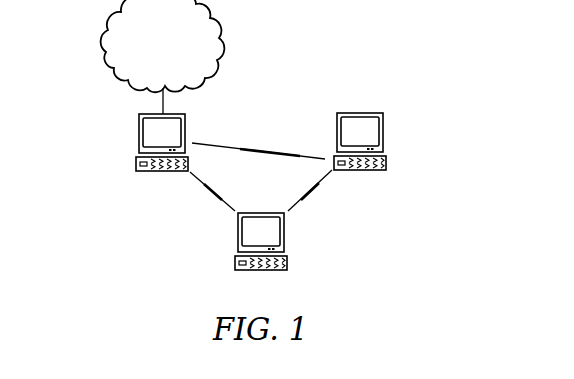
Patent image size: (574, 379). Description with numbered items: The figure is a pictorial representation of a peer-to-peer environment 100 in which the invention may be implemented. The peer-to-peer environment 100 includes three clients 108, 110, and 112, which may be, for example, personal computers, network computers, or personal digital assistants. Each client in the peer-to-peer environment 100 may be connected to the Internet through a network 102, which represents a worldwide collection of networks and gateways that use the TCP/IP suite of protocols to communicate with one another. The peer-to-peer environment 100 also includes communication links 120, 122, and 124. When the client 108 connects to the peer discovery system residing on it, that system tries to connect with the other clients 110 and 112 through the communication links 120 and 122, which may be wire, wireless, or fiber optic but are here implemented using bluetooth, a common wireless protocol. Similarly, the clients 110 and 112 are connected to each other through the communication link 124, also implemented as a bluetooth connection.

The peer-to-peer environment 100 is at (312, 58).
The network 102 is at (108, 44).
The client 108 is at (136, 165).
The client 110 is at (388, 163).
The client 112 is at (235, 263).
The communication link 120 is at (222, 203).
The communication link 122 is at (296, 151).
The communication link 124 is at (302, 203).